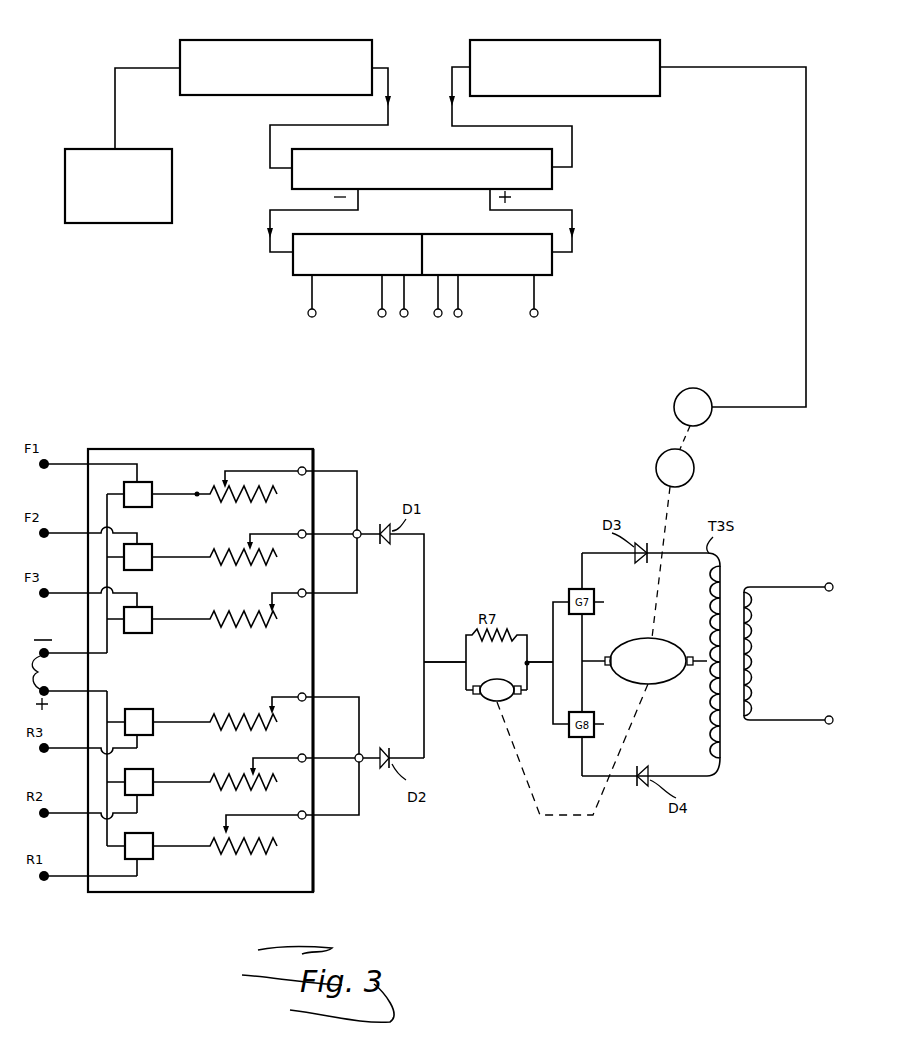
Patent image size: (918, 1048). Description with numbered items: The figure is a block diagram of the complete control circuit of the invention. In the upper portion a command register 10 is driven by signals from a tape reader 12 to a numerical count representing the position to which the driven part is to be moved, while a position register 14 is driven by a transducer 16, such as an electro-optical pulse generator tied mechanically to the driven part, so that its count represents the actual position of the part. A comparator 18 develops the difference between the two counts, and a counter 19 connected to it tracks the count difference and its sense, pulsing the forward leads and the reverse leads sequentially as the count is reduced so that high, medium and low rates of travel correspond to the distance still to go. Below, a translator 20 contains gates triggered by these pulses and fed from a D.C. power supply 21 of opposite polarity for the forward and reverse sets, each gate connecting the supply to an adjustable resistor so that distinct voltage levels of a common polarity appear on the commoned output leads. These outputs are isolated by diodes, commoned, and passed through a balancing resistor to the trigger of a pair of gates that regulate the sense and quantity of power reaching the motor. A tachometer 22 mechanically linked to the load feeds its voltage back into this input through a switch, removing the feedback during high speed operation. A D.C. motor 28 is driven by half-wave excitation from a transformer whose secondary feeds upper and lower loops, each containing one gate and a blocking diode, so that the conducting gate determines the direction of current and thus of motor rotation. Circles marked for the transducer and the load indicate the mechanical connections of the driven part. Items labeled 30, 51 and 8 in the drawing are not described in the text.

The command register 10 is at (359, 40).
The tape reader 12 is at (172, 156).
The position register 14 is at (484, 40).
The comparator 18 is at (547, 175).
The counter 19 is at (547, 265).
The transducer 16 is at (675, 398).
The load 30 is at (692, 479).
The translator 20 is at (313, 455).
The D.C. power supply 21 is at (38, 672).
The tachometer 22 is at (486, 700).
The summing junction 51 is at (530, 667).
The D.C. motor 28 is at (632, 641).
The transformer secondary 8 is at (760, 712).